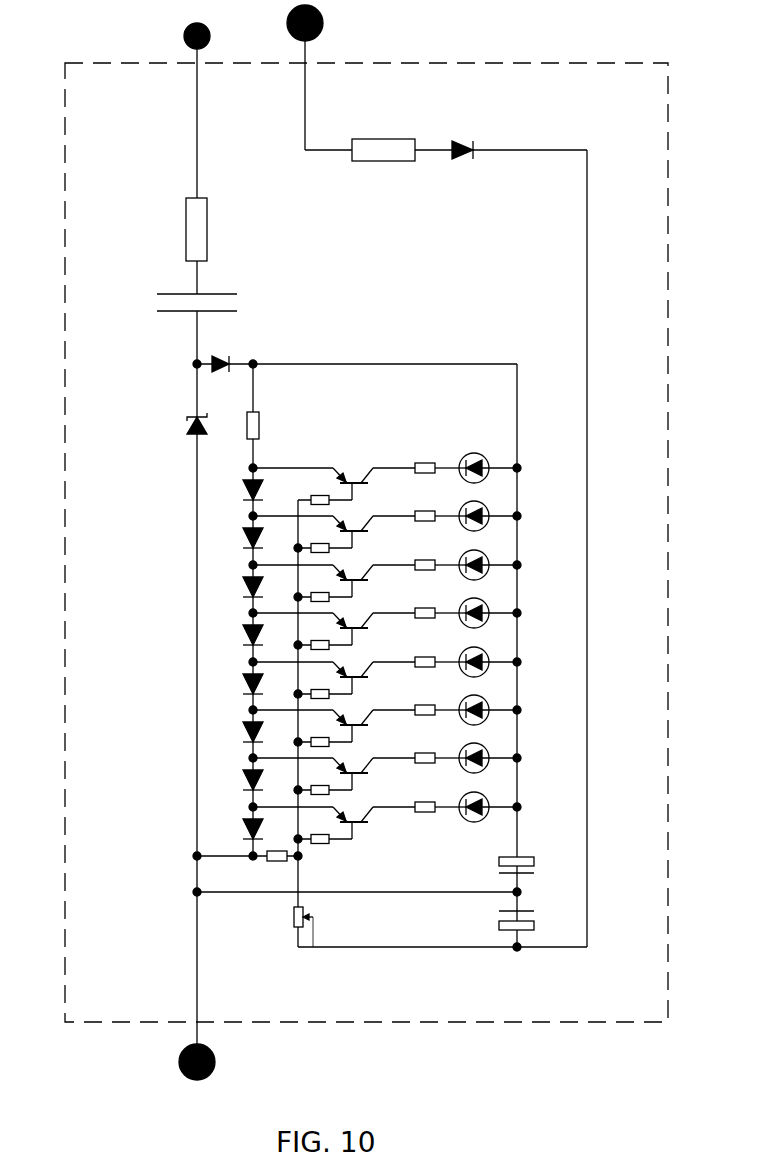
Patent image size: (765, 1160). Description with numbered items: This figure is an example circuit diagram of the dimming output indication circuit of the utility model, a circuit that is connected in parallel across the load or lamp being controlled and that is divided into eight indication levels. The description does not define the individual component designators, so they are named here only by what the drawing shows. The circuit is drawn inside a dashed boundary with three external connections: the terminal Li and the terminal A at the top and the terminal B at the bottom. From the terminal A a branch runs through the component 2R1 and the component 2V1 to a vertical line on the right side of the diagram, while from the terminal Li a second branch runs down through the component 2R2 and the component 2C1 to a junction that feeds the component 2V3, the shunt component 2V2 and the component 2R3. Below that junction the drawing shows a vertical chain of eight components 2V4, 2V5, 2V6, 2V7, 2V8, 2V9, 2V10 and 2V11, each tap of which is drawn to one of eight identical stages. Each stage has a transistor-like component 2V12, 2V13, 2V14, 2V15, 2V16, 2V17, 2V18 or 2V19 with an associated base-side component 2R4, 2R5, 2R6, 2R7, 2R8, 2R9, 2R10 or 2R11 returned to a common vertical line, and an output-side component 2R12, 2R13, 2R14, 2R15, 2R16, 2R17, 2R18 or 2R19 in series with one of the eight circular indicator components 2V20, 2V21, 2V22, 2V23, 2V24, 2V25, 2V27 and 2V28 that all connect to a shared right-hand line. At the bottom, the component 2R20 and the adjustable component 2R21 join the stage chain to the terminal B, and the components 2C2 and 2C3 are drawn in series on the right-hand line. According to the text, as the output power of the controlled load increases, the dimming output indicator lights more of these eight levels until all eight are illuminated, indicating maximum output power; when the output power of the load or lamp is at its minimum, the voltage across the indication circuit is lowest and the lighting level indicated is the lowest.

The line terminal Li is at (179, 99).
The terminal A is at (335, 77).
The terminal B is at (226, 695).
The resistor 2R1 is at (402, 137).
The resistor 2R2 is at (221, 246).
The resistor 2R3 is at (272, 610).
The resistor 2R4 is at (323, 828).
The resistor 2R5 is at (323, 779).
The resistor 2R6 is at (323, 731).
The resistor 2R7 is at (323, 683).
The resistor 2R8 is at (323, 634).
The resistor 2R9 is at (323, 586).
The resistor 2R10 is at (323, 537).
The resistor 2R11 is at (325, 489).
The resistor 2R12 is at (431, 816).
The resistor 2R13 is at (431, 767).
The resistor 2R14 is at (431, 719).
The resistor 2R15 is at (431, 671).
The resistor 2R16 is at (431, 622).
The resistor 2R17 is at (431, 574).
The resistor 2R18 is at (431, 525).
The resistor 2R19 is at (431, 477).
The resistor 2R20 is at (247, 867).
The potentiometer 2R21 is at (440, 723).
The diode 2V1 is at (517, 533).
The zener diode 2V2 is at (182, 415).
The diode 2V3 is at (355, 651).
The diode 2V4 is at (240, 822).
The diode 2V5 is at (240, 773).
The diode 2V6 is at (240, 725).
The diode 2V7 is at (240, 677).
The diode 2V8 is at (240, 628).
The diode 2V9 is at (240, 580).
The diode 2V10 is at (234, 531).
The diode 2V11 is at (234, 483).
The transistor 2V12 is at (334, 829).
The transistor 2V13 is at (334, 780).
The transistor 2V14 is at (334, 732).
The transistor 2V15 is at (334, 684).
The transistor 2V16 is at (334, 635).
The transistor 2V17 is at (334, 587).
The transistor 2V18 is at (334, 538).
The transistor 2V19 is at (334, 490).
The light emitting diode 2V20 is at (490, 819).
The light emitting diode 2V21 is at (490, 770).
The light emitting diode 2V22 is at (490, 722).
The light emitting diode 2V23 is at (490, 674).
The light emitting diode 2V24 is at (490, 625).
The light emitting diode 2V25 is at (490, 577).
The light emitting diode 2V27 is at (490, 528).
The light emitting diode 2V28 is at (490, 480).
The capacitor 2C1 is at (221, 304).
The electrolytic capacitor 2C2 is at (385, 876).
The electrolytic capacitor 2C3 is at (538, 931).